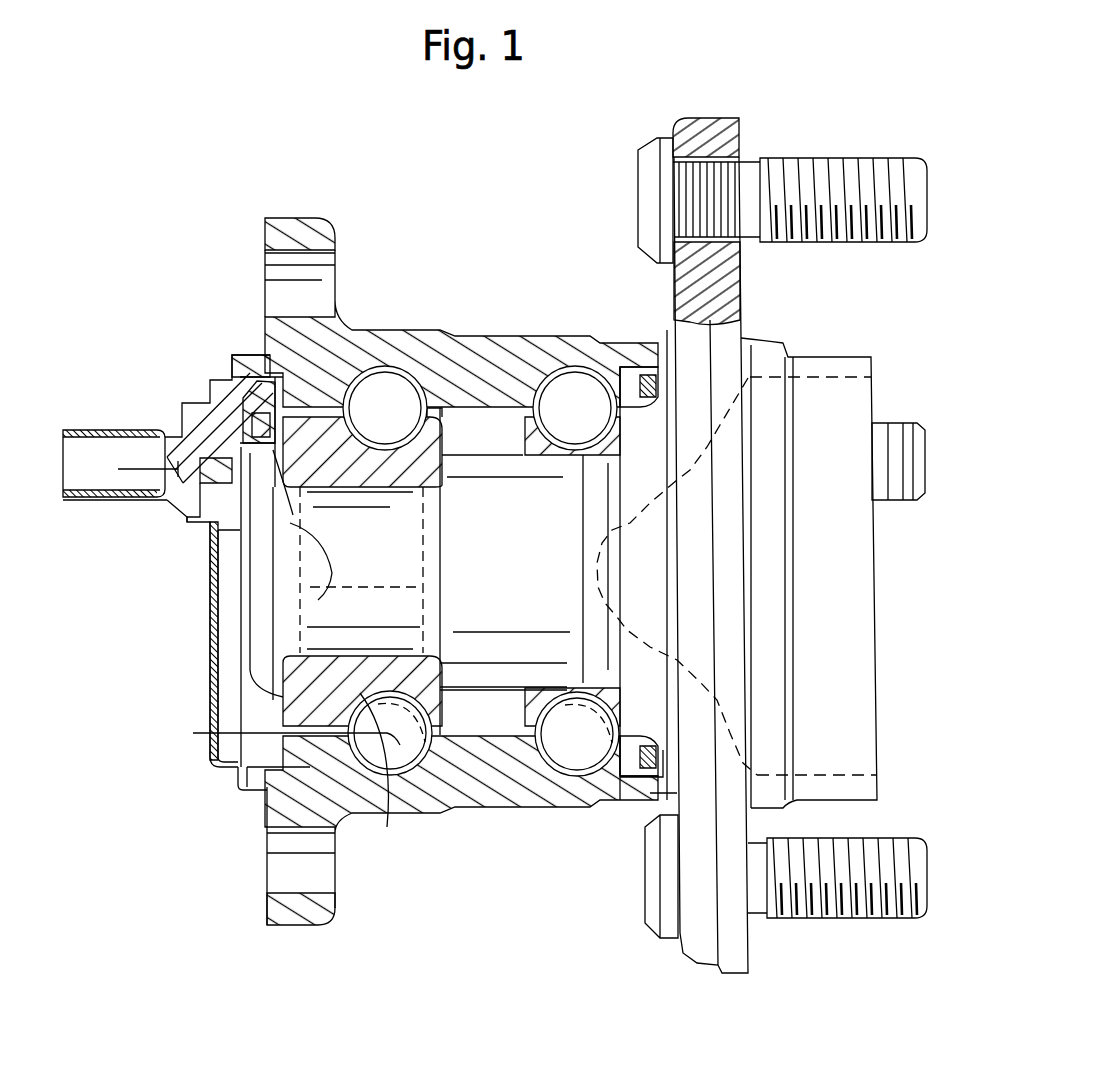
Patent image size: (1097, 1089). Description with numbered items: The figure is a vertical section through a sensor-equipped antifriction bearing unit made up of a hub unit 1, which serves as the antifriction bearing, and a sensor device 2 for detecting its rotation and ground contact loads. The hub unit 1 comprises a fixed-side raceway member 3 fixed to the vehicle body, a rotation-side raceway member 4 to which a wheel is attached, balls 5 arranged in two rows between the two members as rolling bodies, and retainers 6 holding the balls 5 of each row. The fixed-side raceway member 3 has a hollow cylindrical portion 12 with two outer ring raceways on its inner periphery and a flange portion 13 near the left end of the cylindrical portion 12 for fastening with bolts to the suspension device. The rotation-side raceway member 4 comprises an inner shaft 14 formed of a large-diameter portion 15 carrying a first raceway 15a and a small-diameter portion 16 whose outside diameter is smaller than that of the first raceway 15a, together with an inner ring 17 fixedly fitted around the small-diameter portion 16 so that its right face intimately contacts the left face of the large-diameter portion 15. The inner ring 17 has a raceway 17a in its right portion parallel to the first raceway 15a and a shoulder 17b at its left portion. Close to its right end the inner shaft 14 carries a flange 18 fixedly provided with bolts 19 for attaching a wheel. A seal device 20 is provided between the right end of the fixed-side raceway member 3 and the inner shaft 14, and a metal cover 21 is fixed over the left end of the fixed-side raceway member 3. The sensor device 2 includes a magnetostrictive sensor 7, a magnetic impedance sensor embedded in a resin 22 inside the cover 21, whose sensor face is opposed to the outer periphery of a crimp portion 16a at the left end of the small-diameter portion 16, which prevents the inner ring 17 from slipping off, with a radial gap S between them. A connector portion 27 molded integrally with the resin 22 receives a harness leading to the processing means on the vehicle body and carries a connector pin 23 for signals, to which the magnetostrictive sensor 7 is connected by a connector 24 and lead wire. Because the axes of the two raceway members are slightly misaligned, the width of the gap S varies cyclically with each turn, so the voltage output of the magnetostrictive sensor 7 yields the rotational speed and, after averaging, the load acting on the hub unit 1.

The hub unit 1 is at (822, 336).
The sensor device 2 is at (289, 398).
The fixed-side raceway member 3 is at (482, 353).
The rotation-side raceway member 4 is at (499, 444).
The balls 5 is at (388, 380).
The retainers 6 is at (456, 407).
The magnetostrictive sensor 7 is at (215, 402).
The hollow cylindrical portion 12 is at (495, 779).
The flange portion 13 is at (335, 912).
The inner shaft 14 is at (465, 737).
The large-diameter portion 15 is at (541, 763).
The first raceway 15a is at (606, 793).
The small-diameter portion 16 is at (337, 610).
The crimp portion 16a is at (273, 673).
The inner ring 17 is at (273, 707).
The raceway 17a is at (390, 815).
The shoulder 17b is at (307, 737).
The flange 18 is at (733, 280).
The bolts 19 is at (847, 172).
The seal device 20 is at (646, 385).
The cover 21 is at (207, 580).
The resin 22 is at (220, 438).
The connector pin 23 is at (131, 467).
The connector 24 is at (190, 518).
The connector portion 27 is at (95, 500).
The radial gap S is at (293, 515).